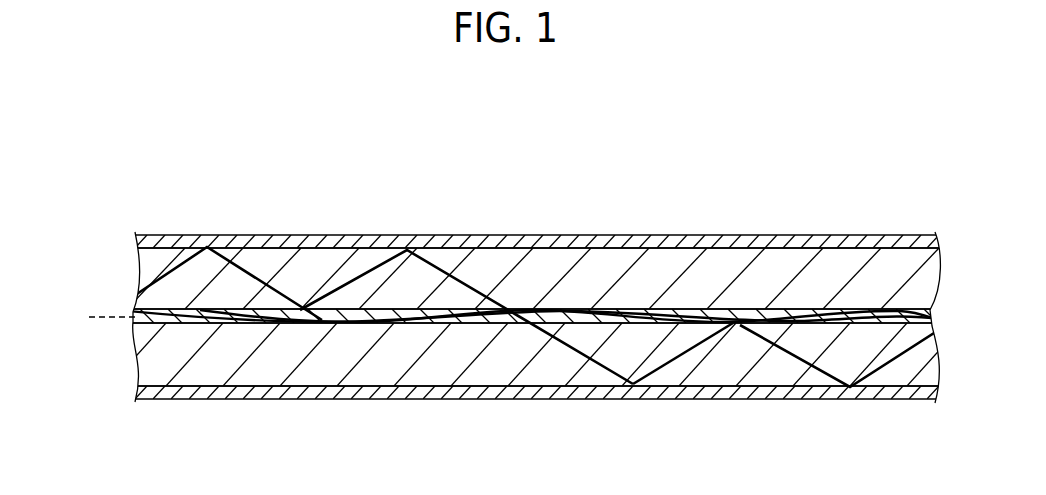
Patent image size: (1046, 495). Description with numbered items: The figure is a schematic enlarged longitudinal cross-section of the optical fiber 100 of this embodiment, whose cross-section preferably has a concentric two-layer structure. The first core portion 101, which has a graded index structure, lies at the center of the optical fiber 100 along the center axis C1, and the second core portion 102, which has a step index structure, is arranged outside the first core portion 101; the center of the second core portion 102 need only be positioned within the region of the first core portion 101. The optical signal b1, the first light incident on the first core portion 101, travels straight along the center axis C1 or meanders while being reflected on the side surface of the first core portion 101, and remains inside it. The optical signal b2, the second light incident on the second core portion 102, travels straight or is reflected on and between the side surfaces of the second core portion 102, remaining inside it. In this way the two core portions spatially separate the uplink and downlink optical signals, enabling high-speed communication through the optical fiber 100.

The optical fiber 100 is at (582, 181).
The first core portion 101 is at (671, 318).
The second core portion 102 is at (497, 270).
The optical signal b1 is at (872, 310).
The optical signal b2 is at (891, 370).
The center axis C1 is at (97, 317).